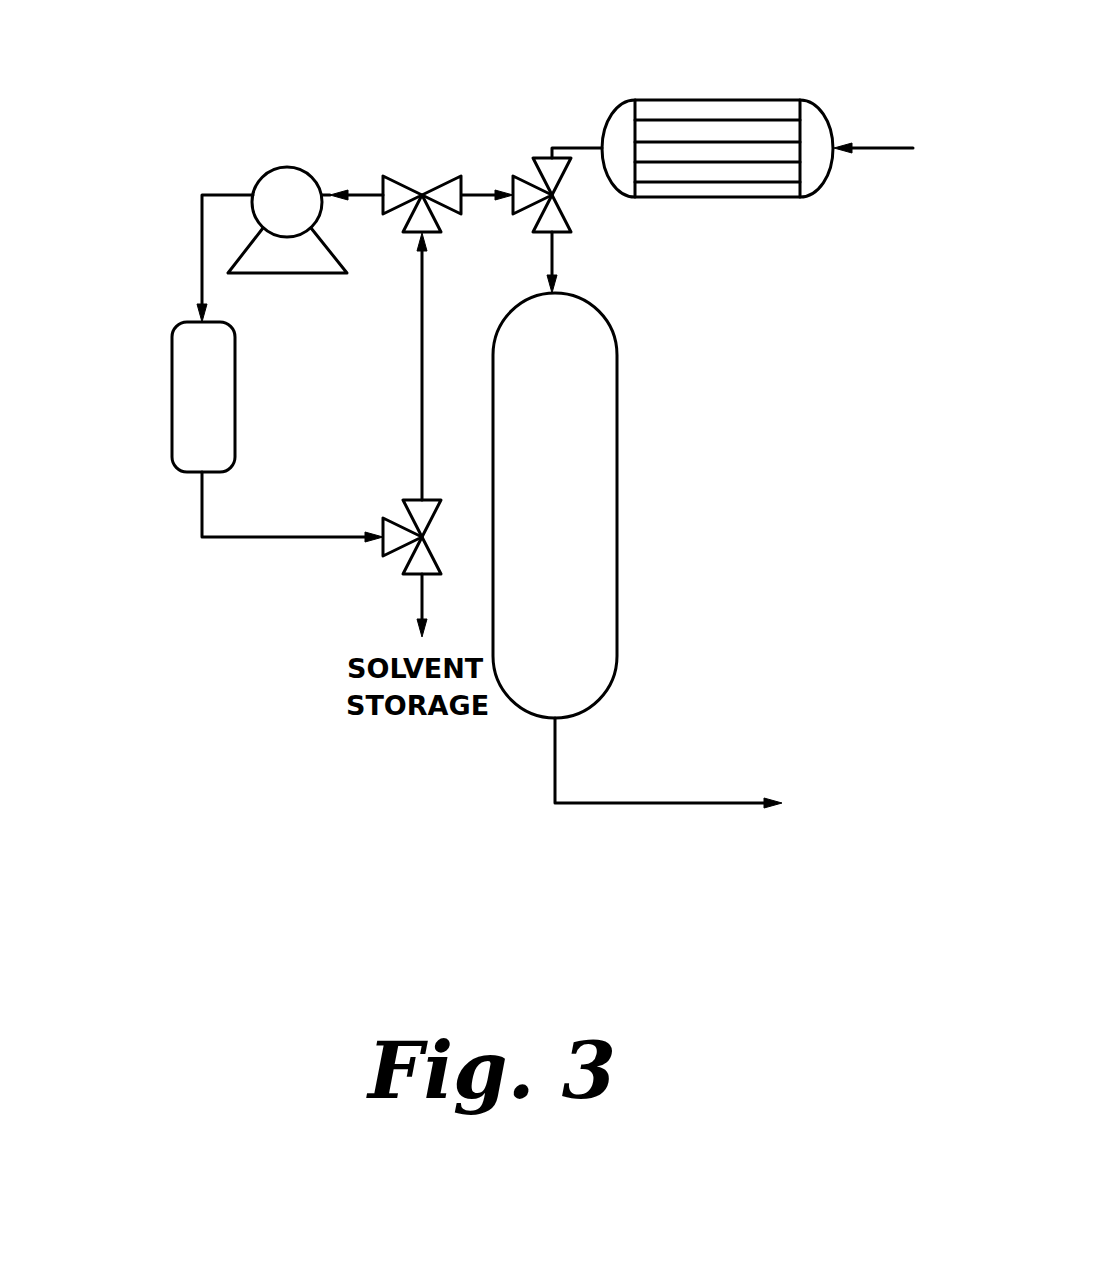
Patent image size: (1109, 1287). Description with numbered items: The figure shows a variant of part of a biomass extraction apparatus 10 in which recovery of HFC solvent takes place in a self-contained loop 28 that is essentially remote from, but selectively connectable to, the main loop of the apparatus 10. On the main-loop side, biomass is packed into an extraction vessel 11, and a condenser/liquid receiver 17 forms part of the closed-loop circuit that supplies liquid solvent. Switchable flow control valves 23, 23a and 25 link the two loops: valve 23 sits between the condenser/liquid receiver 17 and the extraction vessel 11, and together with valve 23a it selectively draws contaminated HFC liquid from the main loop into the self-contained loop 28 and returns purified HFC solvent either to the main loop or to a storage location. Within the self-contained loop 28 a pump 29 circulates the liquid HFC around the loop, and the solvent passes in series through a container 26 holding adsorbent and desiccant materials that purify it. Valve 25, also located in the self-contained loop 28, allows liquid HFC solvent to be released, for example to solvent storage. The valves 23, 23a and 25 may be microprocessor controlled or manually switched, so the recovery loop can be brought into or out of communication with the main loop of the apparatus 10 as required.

The apparatus 10 is at (790, 320).
The extraction vessel 11 is at (593, 600).
The condenser/liquid receiver 17 is at (808, 130).
The flow control valve 23 is at (548, 173).
The flow control valve 23a is at (448, 193).
The valve 25 is at (415, 565).
The container 26 is at (192, 434).
The self-contained loop 28 is at (200, 232).
The pump 29 is at (282, 185).